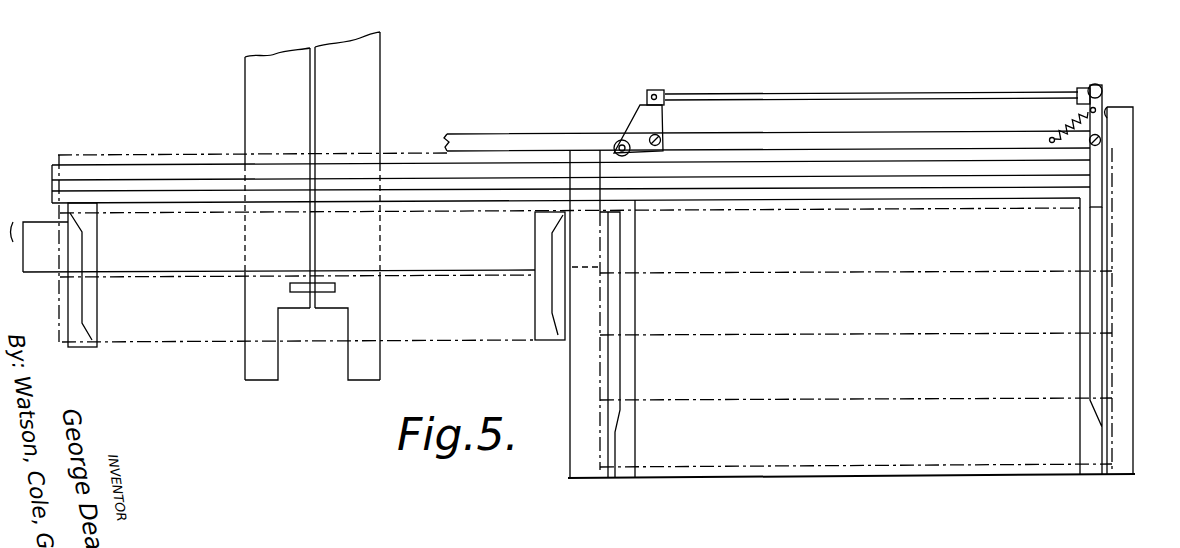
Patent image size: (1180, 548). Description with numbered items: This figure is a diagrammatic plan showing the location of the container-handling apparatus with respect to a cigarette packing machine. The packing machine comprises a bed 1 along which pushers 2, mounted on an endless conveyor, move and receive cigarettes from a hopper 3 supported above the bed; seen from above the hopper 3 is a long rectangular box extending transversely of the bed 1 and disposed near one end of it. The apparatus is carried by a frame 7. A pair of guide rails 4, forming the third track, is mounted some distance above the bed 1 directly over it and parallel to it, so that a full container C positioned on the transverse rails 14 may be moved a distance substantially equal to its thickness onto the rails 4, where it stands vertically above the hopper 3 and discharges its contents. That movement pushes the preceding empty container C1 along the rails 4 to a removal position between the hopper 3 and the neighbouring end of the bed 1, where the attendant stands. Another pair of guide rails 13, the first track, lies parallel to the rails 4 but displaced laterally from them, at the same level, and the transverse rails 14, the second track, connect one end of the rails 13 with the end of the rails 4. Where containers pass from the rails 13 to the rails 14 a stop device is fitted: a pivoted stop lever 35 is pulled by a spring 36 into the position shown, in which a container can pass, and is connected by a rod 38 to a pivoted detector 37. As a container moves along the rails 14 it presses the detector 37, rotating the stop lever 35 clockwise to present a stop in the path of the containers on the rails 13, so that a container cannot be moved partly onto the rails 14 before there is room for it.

The bed 1 is at (278, 378).
The pushers 2 is at (298, 292).
The hopper 3 is at (45, 257).
The guide rails 4 is at (92, 340).
The frame 7 is at (1138, 274).
The guide rails 13 is at (627, 433).
The transverse rails 14 is at (802, 187).
The stop lever 35 is at (1098, 167).
The spring 36 is at (1075, 112).
The detector 37 is at (633, 127).
The rod 38 is at (762, 94).
The full cigarette container C is at (173, 258).
The empty cigarette container C1 is at (193, 322).